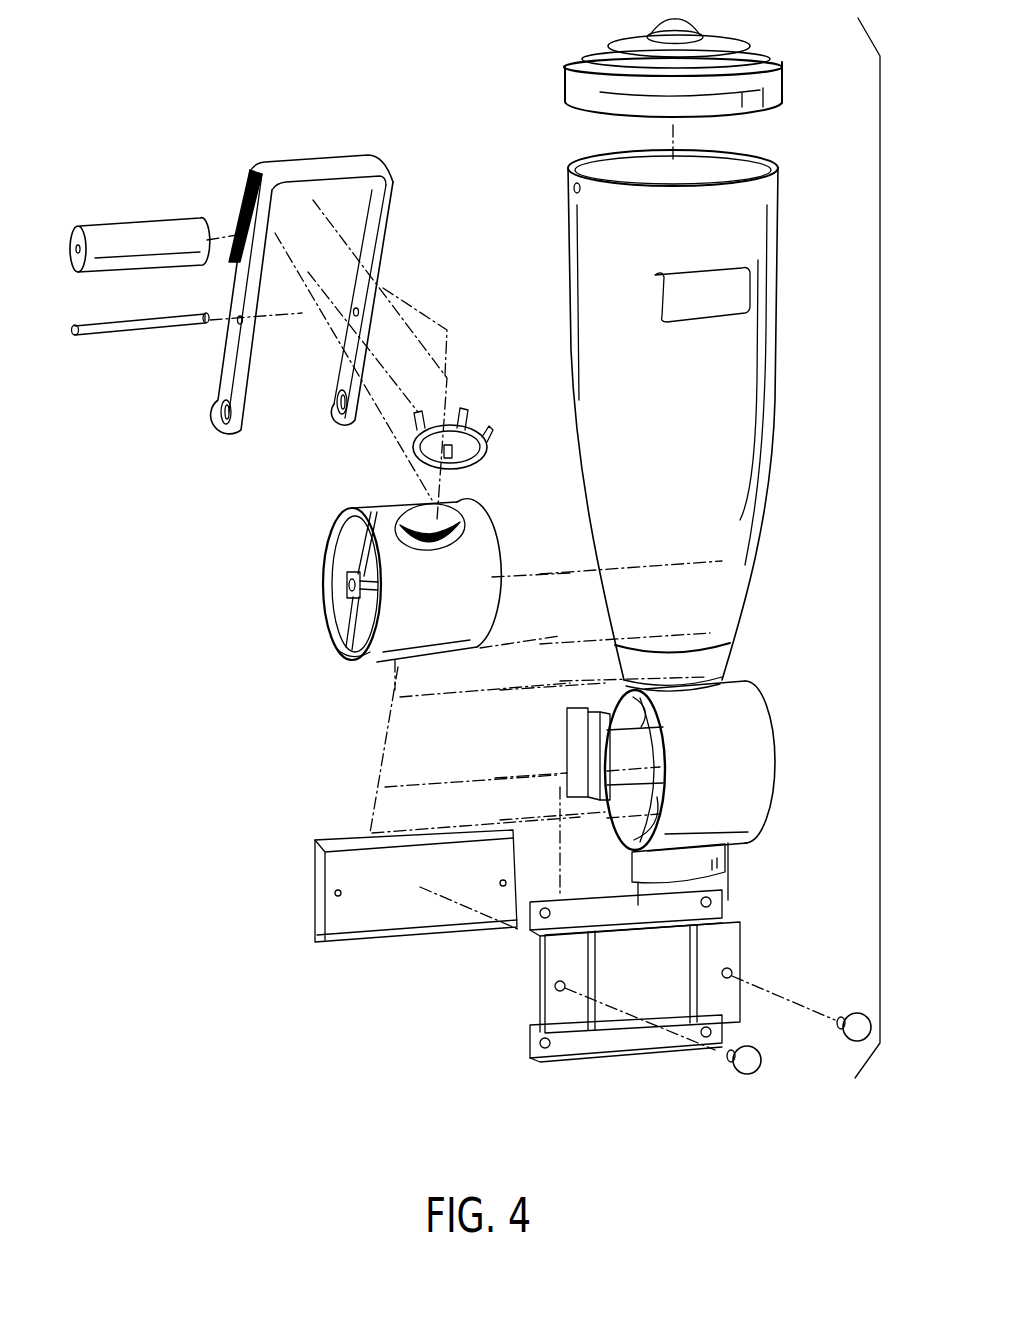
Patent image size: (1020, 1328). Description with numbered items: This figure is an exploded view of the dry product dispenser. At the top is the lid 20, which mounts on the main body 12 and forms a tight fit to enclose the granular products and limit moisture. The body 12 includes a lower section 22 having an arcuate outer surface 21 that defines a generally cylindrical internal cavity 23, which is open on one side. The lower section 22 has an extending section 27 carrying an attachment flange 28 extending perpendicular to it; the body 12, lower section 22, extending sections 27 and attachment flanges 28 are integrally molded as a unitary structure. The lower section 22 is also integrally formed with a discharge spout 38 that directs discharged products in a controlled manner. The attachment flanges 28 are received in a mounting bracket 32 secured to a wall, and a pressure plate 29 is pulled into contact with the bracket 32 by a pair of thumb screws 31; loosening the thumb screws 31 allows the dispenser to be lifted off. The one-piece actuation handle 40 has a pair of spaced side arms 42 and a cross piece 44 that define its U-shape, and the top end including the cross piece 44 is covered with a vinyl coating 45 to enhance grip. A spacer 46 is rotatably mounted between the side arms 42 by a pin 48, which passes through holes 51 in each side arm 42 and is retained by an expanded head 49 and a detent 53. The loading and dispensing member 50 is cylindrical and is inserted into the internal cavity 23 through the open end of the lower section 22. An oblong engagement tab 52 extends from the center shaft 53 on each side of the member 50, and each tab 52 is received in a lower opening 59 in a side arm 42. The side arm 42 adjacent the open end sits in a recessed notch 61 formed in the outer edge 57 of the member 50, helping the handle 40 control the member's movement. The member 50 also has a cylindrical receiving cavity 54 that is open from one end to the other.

The main body 12 is at (742, 461).
The lid 20 is at (785, 86).
The arcuate outer surface 21 is at (756, 761).
The lower section 22 is at (662, 777).
The internal cavity 23 is at (622, 748).
The extending section 27 is at (602, 714).
The attachment flange 28 is at (578, 708).
The pressure plate 29 is at (392, 918).
The thumb screws 31 is at (747, 1070).
The mounting bracket 32 is at (738, 945).
The discharge spout 38 is at (718, 864).
The actuation handle 40 is at (300, 283).
The side arms 42 is at (374, 330).
The cross piece 44 is at (322, 165).
The vinyl coating 45 is at (393, 222).
The spacer 46 is at (148, 238).
The pin 48 is at (139, 342).
The expanded head 49 is at (78, 338).
The loading and dispensing member 50 is at (362, 484).
The holes 51 is at (362, 306).
The engagement tab 52 is at (346, 578).
The center shaft 53 is at (342, 608).
The receiving cavity 54 is at (445, 515).
The outer edge 57 is at (352, 662).
The lower opening 59 is at (216, 425).
The recessed notch 61 is at (375, 509).